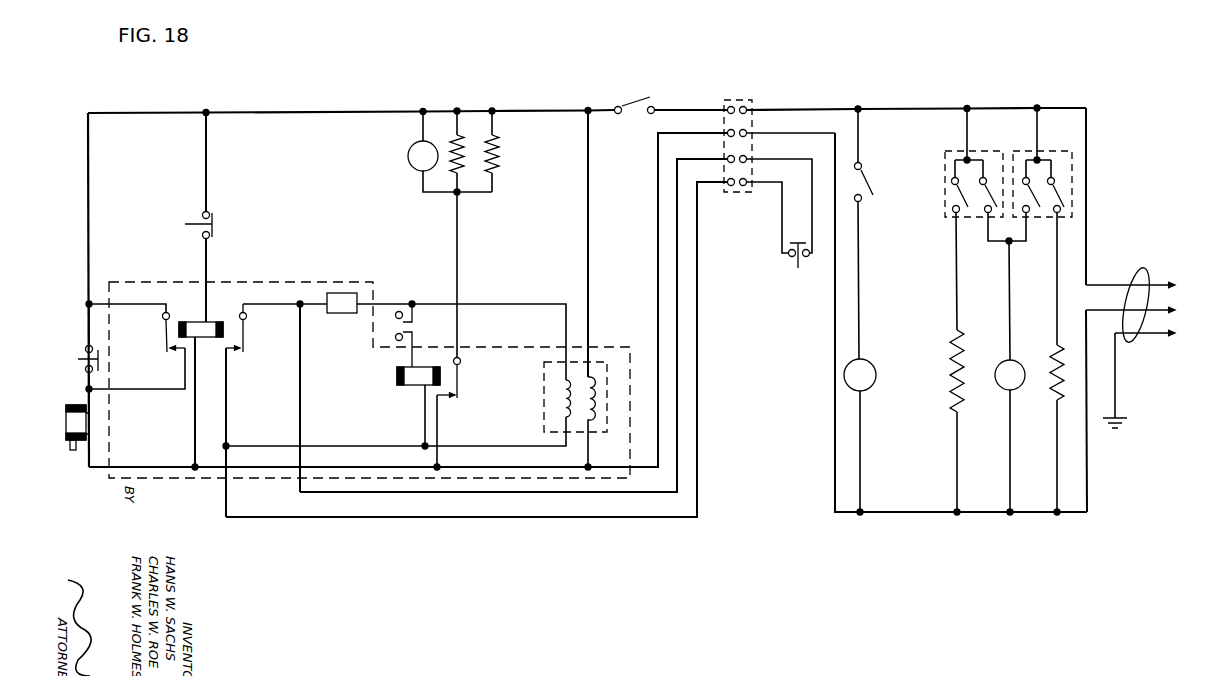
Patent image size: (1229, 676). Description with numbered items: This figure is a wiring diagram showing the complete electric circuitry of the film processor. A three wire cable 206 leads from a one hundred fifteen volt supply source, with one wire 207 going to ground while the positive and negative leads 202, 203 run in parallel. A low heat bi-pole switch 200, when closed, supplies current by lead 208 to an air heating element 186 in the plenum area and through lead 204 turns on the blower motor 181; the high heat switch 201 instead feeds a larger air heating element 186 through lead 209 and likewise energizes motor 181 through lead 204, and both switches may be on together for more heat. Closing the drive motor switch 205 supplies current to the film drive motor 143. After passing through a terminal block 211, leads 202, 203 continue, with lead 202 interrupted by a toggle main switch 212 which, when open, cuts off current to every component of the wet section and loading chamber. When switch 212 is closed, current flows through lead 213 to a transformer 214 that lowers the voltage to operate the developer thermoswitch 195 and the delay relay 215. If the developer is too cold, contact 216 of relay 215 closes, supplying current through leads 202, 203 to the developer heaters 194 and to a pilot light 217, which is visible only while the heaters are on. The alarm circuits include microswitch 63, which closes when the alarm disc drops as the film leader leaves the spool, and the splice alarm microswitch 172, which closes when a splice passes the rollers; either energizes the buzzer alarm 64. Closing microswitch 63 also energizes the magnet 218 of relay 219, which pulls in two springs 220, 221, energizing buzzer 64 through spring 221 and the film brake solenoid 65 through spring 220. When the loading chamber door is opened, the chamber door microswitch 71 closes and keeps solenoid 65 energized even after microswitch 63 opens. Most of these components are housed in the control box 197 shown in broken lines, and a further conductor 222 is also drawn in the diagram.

The microswitch 63 is at (215, 226).
The buzzer alarm 64 is at (343, 292).
The film brake solenoid 65 is at (80, 422).
The chamber door microswitch 71 is at (99, 358).
The film drive motor 143 is at (872, 387).
The splice alarm microswitch 172 is at (792, 265).
The blower motor 181 is at (1000, 390).
The air heating element 186 is at (1050, 352).
The heating elements 194 is at (496, 135).
The thermoswitch 195 is at (395, 310).
The control box 197 is at (292, 282).
The low heat bi-pole switch 200 is at (1066, 192).
The high heat switch 201 is at (958, 193).
The lead 202 is at (990, 106).
The lead 203 is at (354, 466).
The lead 204 is at (1008, 281).
The drive motor switch 205 is at (867, 183).
The three wire cable 206 is at (1147, 280).
The ground wire 207 is at (1117, 388).
The lead 208 is at (1060, 230).
The lead 209 is at (955, 283).
The terminal block 211 is at (722, 100).
The toggle main switch 212 is at (628, 104).
The lead 213 is at (589, 262).
The transformer 214 is at (592, 380).
The delay relay 215 is at (410, 394).
The contact 216 is at (462, 383).
The pilot light 217 is at (407, 158).
The magnet 218 is at (200, 321).
The relay 219 is at (177, 300).
The spring 220 is at (164, 335).
The spring 221 is at (246, 336).
The conductor 222 is at (228, 403).